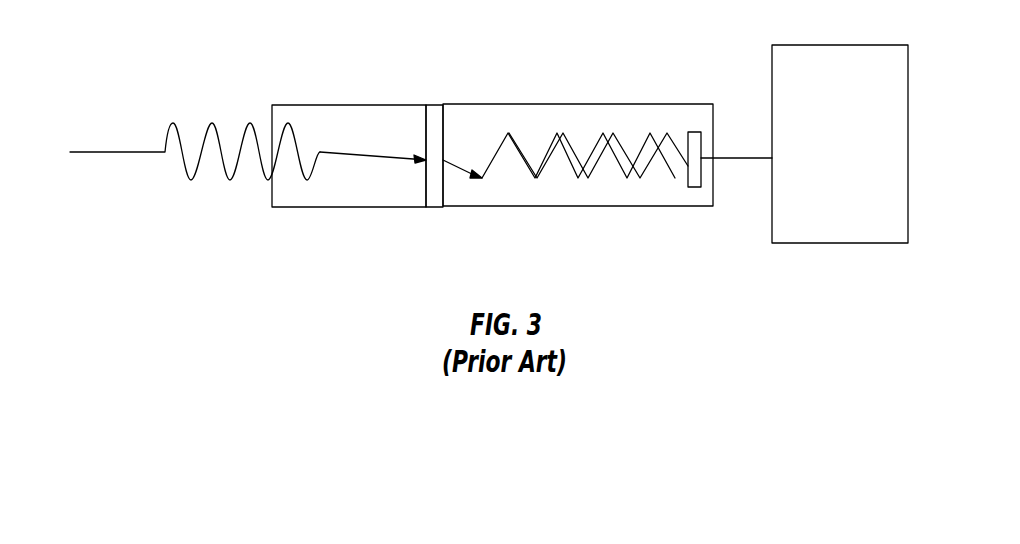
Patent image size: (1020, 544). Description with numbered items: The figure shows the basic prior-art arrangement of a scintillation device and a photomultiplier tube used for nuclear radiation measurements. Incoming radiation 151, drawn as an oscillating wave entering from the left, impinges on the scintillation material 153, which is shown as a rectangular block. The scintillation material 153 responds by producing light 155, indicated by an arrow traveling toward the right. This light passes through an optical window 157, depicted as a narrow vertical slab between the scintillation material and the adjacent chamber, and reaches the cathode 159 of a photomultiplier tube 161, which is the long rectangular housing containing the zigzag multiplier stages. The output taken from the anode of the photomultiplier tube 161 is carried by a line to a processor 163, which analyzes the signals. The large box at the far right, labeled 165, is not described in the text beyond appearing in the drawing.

The incoming radiation 151 is at (192, 183).
The scintillation material 153 is at (330, 201).
The light 155 is at (335, 152).
The optical window 157 is at (432, 105).
The cathode 159 is at (446, 115).
The photomultiplier tube 161 is at (564, 93).
The processor 163 is at (688, 186).
The processing unit box 165 is at (772, 72).